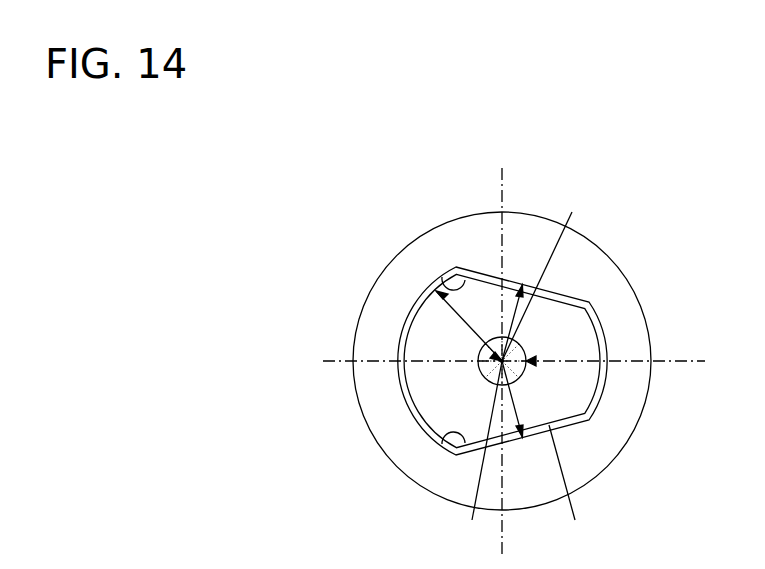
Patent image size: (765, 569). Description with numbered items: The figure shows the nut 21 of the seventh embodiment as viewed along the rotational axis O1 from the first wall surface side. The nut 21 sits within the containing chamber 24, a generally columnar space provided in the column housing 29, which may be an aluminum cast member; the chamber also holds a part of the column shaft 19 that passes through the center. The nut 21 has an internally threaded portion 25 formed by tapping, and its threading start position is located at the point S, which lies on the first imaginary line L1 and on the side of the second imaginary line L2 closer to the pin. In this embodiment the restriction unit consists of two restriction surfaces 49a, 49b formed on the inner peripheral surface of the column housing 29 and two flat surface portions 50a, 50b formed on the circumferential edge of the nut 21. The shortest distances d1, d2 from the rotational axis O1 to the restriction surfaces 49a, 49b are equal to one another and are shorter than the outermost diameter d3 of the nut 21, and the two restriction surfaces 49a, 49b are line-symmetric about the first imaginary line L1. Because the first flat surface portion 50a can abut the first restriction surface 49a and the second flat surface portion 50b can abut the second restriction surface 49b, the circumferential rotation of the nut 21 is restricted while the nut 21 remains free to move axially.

The column shaft 19 is at (481, 454).
The nut 21 is at (597, 305).
The containing chamber 24 is at (603, 342).
The internally threaded portion 25 is at (320, 316).
The column housing 29 is at (590, 257).
The first restriction surface 49a is at (447, 277).
The second restriction surface 49b is at (430, 438).
The first flat surface portion 50a is at (546, 276).
The second flat surface portion 50b is at (571, 486).
The first imaginary line L1 is at (340, 361).
The second imaginary line L2 is at (505, 173).
The rotational axis O1 is at (480, 366).
The point S is at (527, 366).
The shortest distance d1 is at (525, 292).
The shortest distance d2 is at (523, 432).
The outermost diameter d3 is at (455, 297).